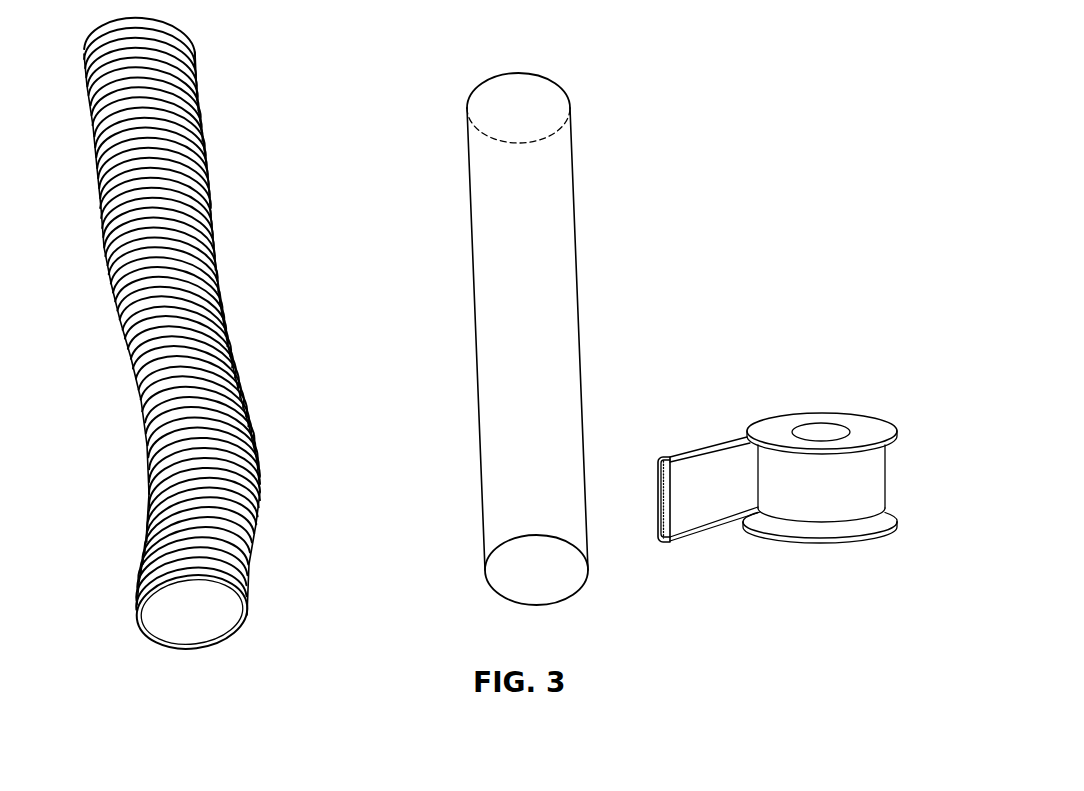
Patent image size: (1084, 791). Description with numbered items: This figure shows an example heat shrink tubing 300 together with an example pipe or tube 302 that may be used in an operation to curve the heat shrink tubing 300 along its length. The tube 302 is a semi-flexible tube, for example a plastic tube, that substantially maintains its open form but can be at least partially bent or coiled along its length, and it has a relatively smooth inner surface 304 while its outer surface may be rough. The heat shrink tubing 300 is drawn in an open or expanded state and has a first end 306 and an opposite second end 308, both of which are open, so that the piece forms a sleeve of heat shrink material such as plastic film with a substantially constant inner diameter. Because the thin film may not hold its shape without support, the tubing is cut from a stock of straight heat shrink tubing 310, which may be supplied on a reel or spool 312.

The heat shrink tubing 300 is at (558, 297).
The pipe or tube 302 is at (210, 295).
The inner surface 304 is at (155, 620).
The first end 306 is at (588, 577).
The second end 308 is at (537, 73).
The stock of straight heat shrink tubing 310 is at (705, 468).
The reel or spool 312 is at (872, 430).